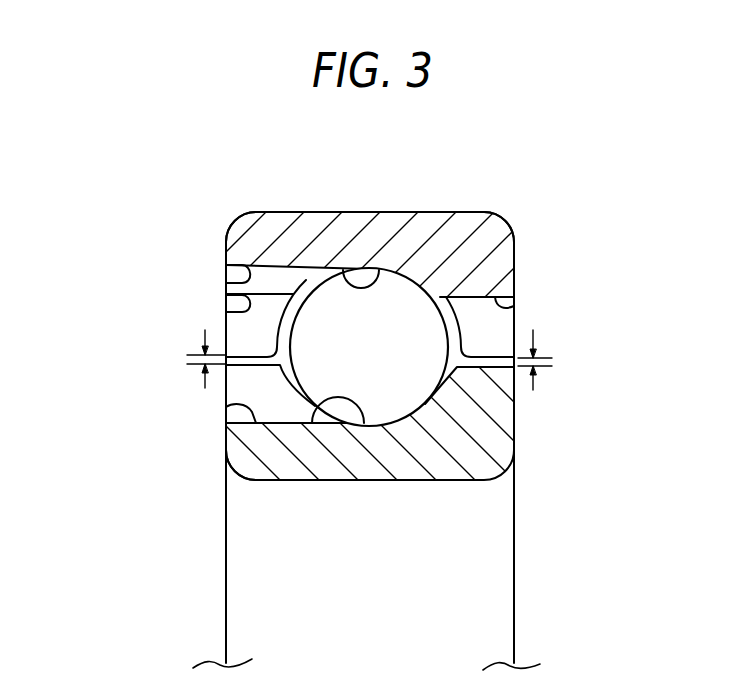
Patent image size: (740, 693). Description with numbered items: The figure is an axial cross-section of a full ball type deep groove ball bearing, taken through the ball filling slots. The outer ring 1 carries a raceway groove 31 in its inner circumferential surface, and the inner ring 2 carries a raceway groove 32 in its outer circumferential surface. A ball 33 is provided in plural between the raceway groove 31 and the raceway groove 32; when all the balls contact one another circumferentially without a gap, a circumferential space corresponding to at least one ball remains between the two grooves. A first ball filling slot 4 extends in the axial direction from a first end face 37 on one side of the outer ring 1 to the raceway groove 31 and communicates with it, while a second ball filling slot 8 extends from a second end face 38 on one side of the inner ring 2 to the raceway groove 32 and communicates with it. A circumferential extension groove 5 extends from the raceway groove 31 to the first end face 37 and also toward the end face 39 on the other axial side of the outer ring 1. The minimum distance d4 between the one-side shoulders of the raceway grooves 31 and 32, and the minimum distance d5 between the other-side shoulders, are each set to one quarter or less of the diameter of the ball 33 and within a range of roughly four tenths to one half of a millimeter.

The outer ring 1 is at (456, 237).
The inner ring 2 is at (434, 450).
The first ball filling slot 4 is at (226, 282).
The circumferential extension groove 5 is at (226, 308).
The second ball filling slot 8 is at (226, 407).
The raceway groove 31 is at (346, 276).
The raceway groove 32 is at (312, 406).
The ball 33 is at (320, 325).
The first end face 37 is at (226, 248).
The second end face 38 is at (226, 438).
The end face 39 is at (517, 263).
The minimum distance d4 is at (188, 358).
The minimum distance d5 is at (550, 362).